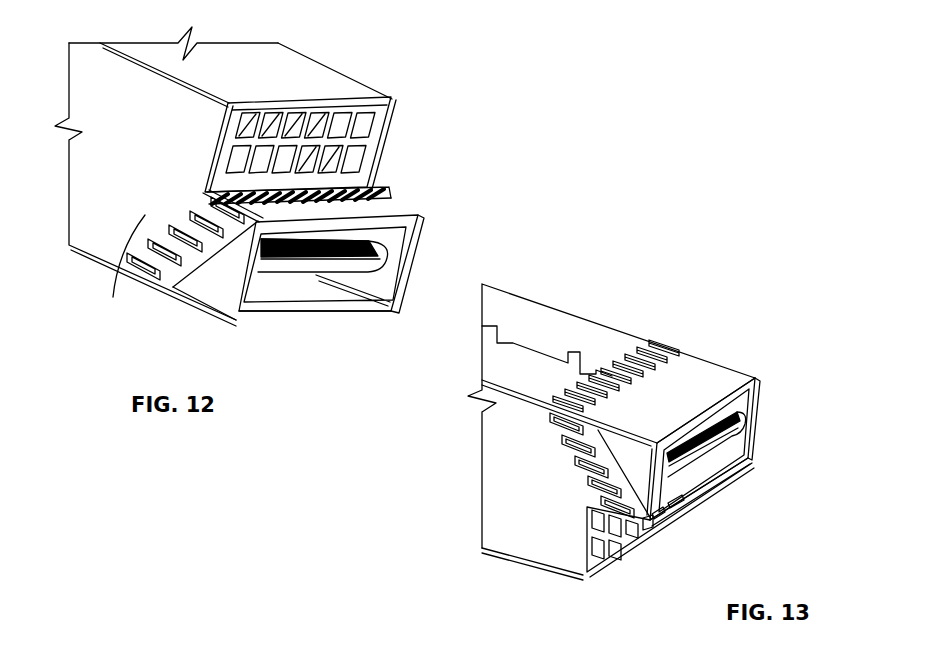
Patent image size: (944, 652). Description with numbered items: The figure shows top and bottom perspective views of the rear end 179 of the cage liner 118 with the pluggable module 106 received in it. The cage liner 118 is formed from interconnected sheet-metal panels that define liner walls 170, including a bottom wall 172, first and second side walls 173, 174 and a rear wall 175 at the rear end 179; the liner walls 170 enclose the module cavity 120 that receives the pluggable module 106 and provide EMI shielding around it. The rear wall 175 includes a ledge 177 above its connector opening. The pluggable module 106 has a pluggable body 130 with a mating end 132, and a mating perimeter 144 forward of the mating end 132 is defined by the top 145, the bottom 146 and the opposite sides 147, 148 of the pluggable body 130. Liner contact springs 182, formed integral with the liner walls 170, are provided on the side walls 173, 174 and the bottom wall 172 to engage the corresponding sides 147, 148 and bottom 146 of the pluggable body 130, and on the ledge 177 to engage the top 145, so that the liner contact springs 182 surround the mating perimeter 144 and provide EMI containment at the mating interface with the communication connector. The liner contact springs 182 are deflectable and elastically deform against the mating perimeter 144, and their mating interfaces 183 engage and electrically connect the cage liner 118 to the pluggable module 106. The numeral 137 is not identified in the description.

In FIG. 12, the pluggable module 106 is at (333, 320).
In FIG. 13, the pluggable module 106 is at (676, 367).
In FIG. 12, the cage liner 118 is at (300, 72).
In FIG. 13, the cage liner 118 is at (556, 318).
In FIG. 12, the module cavity 120 is at (198, 288).
In FIG. 13, the module cavity 120 is at (752, 458).
In FIG. 12, the pluggable body 130 is at (286, 318).
In FIG. 13, the pluggable body 130 is at (721, 481).
In FIG. 12, the mating end 132 is at (402, 302).
In FIG. 13, the mating end 132 is at (760, 427).
In FIG. 12, the chassis panel 137 is at (173, 30).
In FIG. 12, the mating perimeter 144 is at (384, 205).
In FIG. 13, the mating perimeter 144 is at (667, 497).
In FIG. 12, the top 145 is at (382, 188).
In FIG. 13, the bottom 146 is at (695, 400).
In FIG. 12, the side 147 is at (232, 292).
In FIG. 12, the side 148 is at (402, 270).
In FIG. 13, the side 148 is at (641, 477).
In FIG. 12, the liner walls 170 is at (118, 210).
In FIG. 13, the liner walls 170 is at (503, 304).
In FIG. 13, the bottom wall 172 is at (595, 335).
In FIG. 12, the first side wall 173 is at (119, 267).
In FIG. 13, the second side wall 174 is at (527, 518).
In FIG. 12, the rear wall 175 is at (365, 168).
In FIG. 13, the rear wall 175 is at (607, 558).
In FIG. 12, the ledge 177 is at (312, 190).
In FIG. 12, the rear end 179 is at (404, 110).
In FIG. 13, the rear end 179 is at (688, 520).
In FIG. 12, the liner contact springs 182 is at (183, 243).
In FIG. 13, the liner contact springs 182 is at (657, 352).
In FIG. 12, the mating interfaces 183 is at (311, 216).
In FIG. 13, the mating interfaces 183 is at (700, 383).